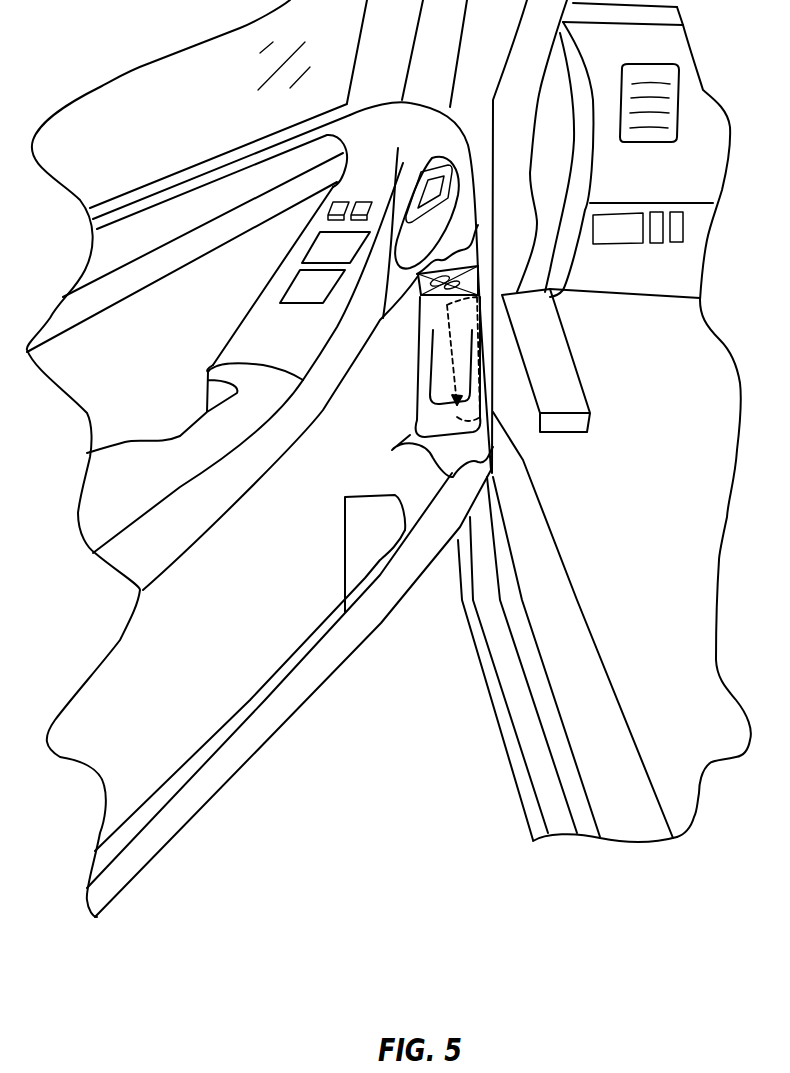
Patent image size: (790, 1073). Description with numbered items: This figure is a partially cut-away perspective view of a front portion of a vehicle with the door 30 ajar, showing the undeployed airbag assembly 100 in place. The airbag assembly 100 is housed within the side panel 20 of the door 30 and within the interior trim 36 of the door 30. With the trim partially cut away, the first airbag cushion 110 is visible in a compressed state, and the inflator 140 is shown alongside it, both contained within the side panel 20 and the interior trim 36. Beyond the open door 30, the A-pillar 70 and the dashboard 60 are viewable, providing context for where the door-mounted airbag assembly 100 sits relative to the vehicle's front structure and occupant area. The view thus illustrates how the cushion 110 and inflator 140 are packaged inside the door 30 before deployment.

The side panel 20 is at (258, 578).
The door 30 is at (328, 696).
The interior trim 36 is at (452, 529).
The dashboard 60 is at (653, 190).
The A-pillar 70 is at (534, 66).
The airbag assembly 100 is at (476, 390).
The first airbag cushion 110 is at (418, 292).
The inflator 140 is at (483, 363).